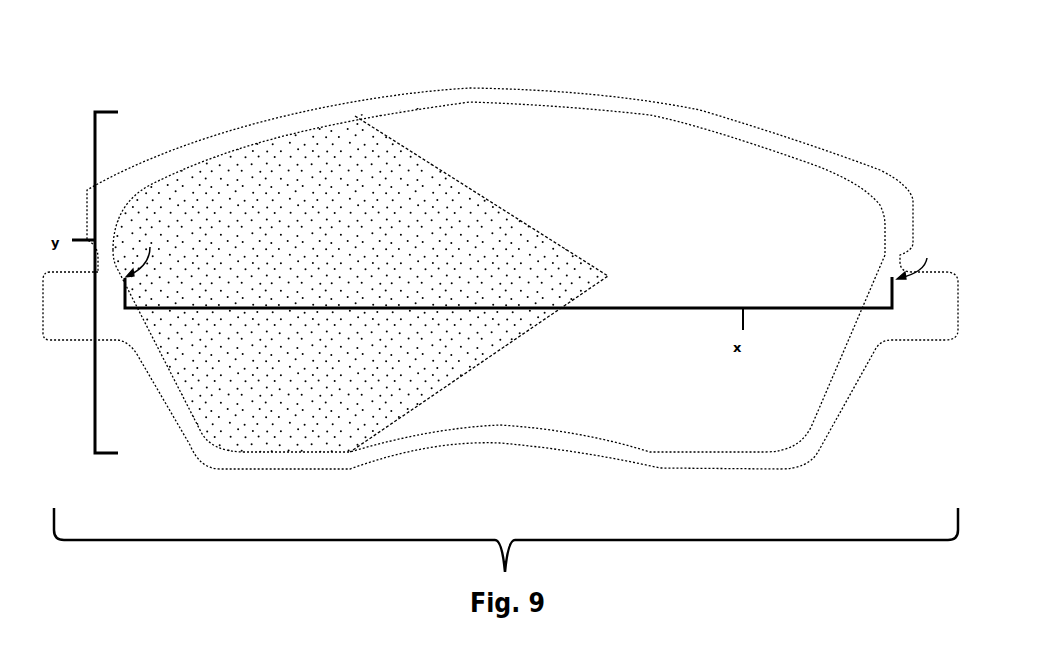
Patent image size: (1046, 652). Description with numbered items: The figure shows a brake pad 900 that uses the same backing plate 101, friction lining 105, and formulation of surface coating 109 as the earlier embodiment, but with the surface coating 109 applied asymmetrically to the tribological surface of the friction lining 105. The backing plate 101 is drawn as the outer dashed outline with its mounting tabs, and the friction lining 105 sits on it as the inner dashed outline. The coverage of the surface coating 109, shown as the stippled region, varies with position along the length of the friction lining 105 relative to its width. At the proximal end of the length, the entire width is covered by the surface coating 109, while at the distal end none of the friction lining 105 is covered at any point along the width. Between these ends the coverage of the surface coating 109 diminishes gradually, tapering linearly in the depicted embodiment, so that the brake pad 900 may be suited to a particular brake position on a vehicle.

The brake pad 900 is at (724, 80).
The backing plate 101 is at (857, 160).
The friction lining 105 is at (604, 125).
The surface coating 109 is at (300, 437).